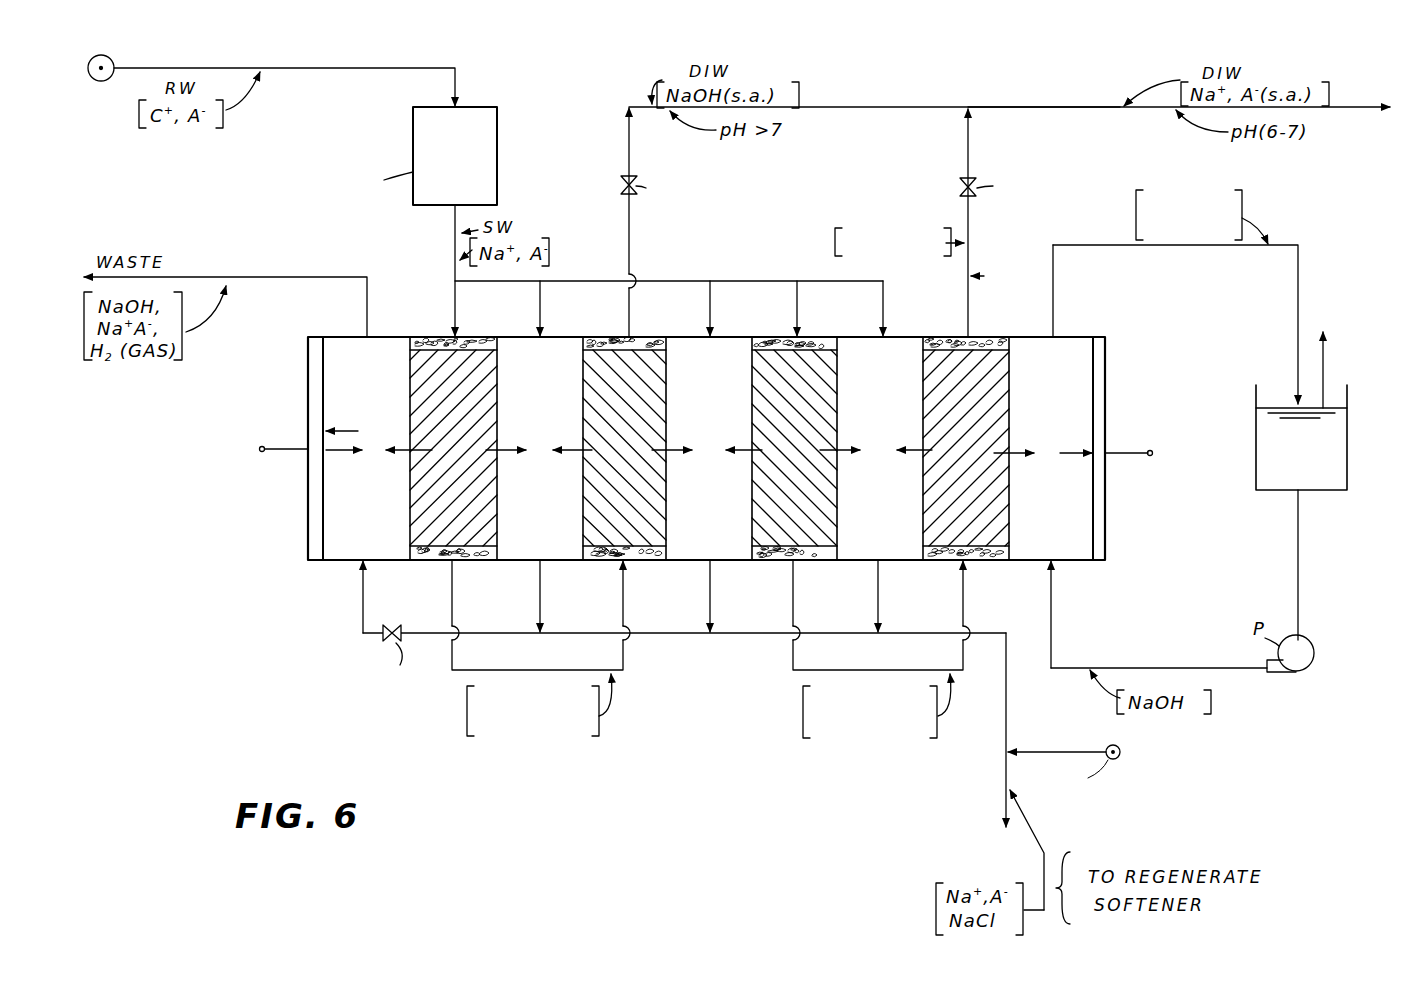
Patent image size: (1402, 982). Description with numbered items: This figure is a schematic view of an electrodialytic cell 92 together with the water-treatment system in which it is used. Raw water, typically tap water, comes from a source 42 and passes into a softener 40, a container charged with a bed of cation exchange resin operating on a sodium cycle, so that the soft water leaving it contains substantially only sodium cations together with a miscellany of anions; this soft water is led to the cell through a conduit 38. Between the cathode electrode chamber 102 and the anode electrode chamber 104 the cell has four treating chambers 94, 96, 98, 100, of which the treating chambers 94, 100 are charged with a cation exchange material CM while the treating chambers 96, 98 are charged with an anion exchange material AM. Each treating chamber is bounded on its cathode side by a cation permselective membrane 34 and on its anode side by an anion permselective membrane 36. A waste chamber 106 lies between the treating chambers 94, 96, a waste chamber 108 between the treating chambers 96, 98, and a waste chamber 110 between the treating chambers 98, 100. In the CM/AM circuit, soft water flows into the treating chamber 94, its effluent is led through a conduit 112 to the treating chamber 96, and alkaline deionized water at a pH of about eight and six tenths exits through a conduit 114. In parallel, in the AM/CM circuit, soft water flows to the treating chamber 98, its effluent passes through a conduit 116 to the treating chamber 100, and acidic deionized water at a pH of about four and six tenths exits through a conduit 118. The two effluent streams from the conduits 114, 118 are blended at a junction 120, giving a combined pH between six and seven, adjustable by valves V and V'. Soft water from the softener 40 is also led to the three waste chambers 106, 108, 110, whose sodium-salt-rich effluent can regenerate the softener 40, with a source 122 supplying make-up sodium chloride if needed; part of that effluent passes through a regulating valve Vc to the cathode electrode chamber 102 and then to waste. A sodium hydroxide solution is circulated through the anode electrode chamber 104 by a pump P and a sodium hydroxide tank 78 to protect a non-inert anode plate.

The cation permselective membrane 34 is at (410, 388).
The anion permselective membrane 36 is at (497, 392).
The conduit 38 is at (450, 215).
The softener 40 is at (497, 150).
The source 42 is at (108, 81).
The sodium hydroxide tank 78 is at (1256, 446).
The electrodialytic cell 92 is at (325, 567).
The treating chamber 94 is at (433, 560).
The treating chamber 96 is at (604, 560).
The treating chamber 98 is at (770, 560).
The treating chamber 100 is at (944, 560).
The cathode electrode chamber 102 is at (330, 520).
The anode electrode chamber 104 is at (1037, 560).
The waste chamber 106 is at (512, 560).
The waste chamber 108 is at (688, 560).
The waste chamber 110 is at (858, 560).
The conduit 112 is at (452, 672).
The conduit 114 is at (630, 241).
The conduit 116 is at (792, 672).
The conduit 118 is at (966, 290).
The junction 120 is at (971, 104).
The source of sodium chloride 122 is at (1121, 752).